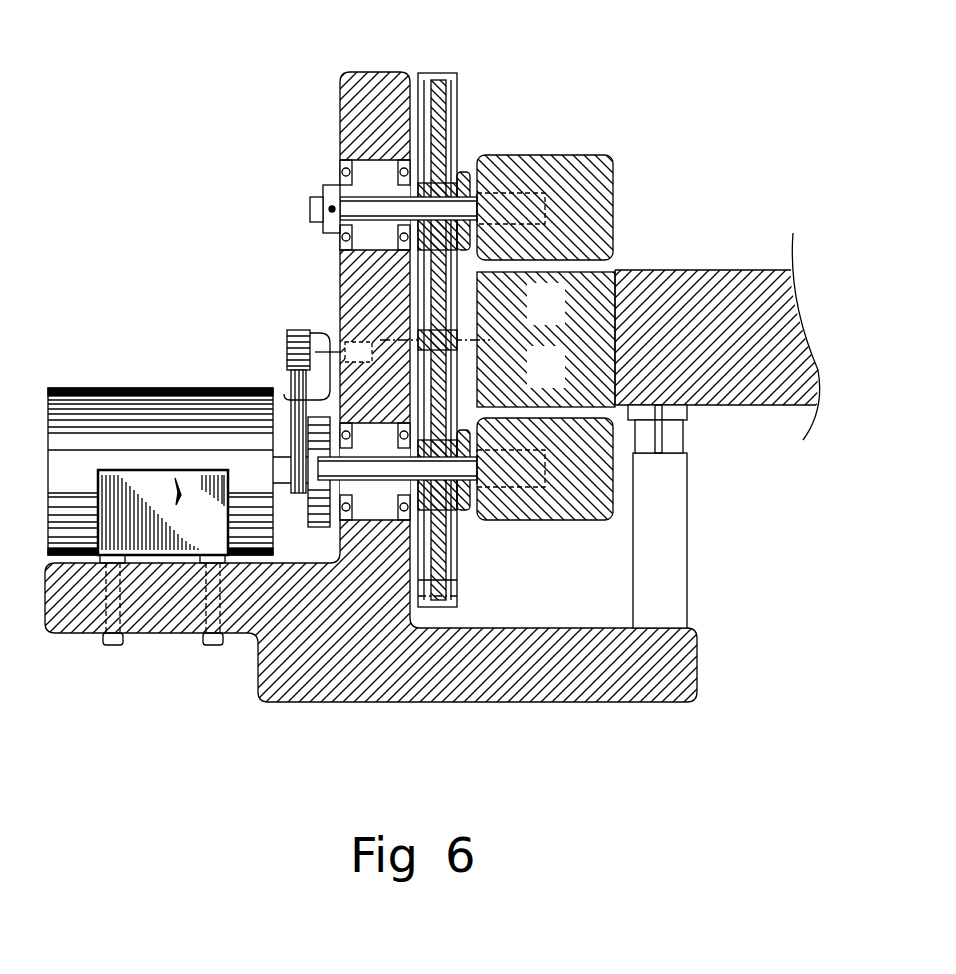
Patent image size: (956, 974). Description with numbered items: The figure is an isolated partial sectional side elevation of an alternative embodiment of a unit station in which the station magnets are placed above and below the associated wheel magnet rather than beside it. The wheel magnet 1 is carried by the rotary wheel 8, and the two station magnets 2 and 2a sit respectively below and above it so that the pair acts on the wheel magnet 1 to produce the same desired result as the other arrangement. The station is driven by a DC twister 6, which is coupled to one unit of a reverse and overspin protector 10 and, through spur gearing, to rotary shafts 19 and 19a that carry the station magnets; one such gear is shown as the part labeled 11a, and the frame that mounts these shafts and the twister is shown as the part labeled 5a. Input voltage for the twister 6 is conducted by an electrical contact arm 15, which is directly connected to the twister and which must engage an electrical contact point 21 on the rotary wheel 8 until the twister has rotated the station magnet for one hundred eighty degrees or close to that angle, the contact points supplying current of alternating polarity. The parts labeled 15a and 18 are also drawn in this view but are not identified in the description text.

The wheel magnet 1 is at (615, 270).
The station magnet 2 is at (590, 510).
The station magnet 2a is at (577, 160).
The frame 5a is at (368, 78).
The twister 6 is at (160, 393).
The rotary wheel 8 is at (773, 330).
The reverse and overspin protector 10 is at (300, 332).
The rotary disk 11a is at (435, 78).
The electrical contact arm 15 is at (673, 437).
The screw 15a is at (643, 442).
The bearing 18 is at (340, 163).
The rotary shaft 19 is at (462, 505).
The rotary shaft 19a is at (337, 238).
The electrical contact point 21 is at (687, 418).